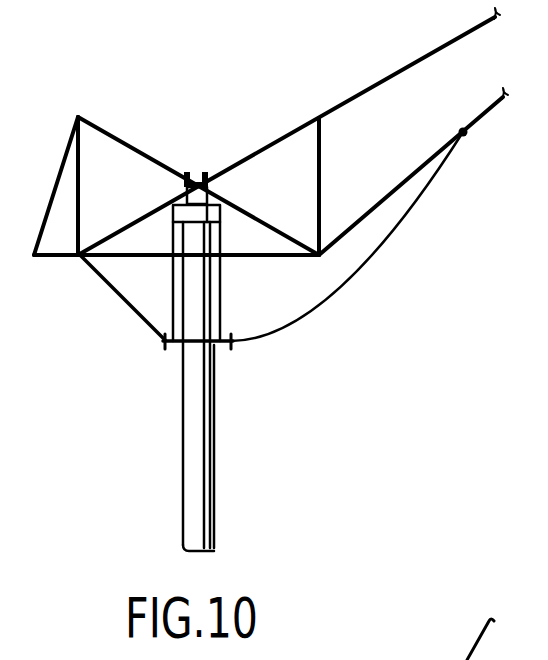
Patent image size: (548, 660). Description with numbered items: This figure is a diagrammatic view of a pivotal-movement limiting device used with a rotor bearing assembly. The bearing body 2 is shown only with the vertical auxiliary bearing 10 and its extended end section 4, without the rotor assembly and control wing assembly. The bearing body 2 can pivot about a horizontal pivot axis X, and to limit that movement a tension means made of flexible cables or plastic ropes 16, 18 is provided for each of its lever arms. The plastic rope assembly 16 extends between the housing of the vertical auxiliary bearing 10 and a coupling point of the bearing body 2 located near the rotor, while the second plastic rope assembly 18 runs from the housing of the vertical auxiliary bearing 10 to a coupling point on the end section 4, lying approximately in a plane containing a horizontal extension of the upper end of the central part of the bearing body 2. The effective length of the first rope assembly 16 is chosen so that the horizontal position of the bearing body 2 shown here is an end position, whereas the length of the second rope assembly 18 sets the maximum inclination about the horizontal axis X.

The bearing body 2 is at (106, 259).
The extended end section 4 is at (483, 114).
The vertical auxiliary bearing 10 is at (233, 347).
The plastic rope assembly 16 is at (116, 303).
The second plastic rope assembly 18 is at (413, 216).
The horizontal pivot axis X is at (198, 170).